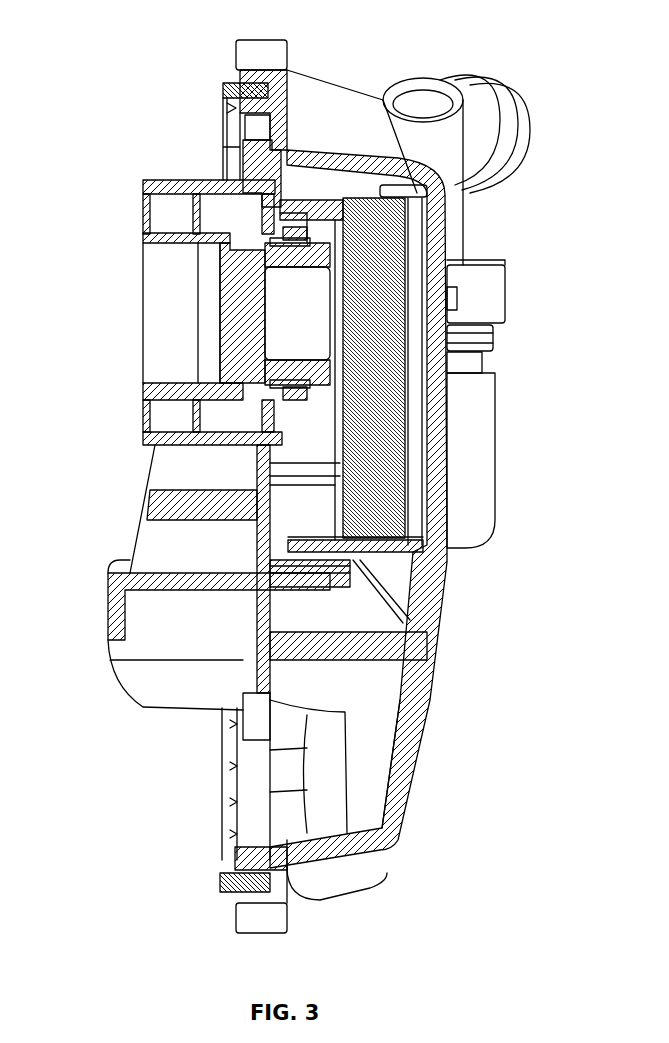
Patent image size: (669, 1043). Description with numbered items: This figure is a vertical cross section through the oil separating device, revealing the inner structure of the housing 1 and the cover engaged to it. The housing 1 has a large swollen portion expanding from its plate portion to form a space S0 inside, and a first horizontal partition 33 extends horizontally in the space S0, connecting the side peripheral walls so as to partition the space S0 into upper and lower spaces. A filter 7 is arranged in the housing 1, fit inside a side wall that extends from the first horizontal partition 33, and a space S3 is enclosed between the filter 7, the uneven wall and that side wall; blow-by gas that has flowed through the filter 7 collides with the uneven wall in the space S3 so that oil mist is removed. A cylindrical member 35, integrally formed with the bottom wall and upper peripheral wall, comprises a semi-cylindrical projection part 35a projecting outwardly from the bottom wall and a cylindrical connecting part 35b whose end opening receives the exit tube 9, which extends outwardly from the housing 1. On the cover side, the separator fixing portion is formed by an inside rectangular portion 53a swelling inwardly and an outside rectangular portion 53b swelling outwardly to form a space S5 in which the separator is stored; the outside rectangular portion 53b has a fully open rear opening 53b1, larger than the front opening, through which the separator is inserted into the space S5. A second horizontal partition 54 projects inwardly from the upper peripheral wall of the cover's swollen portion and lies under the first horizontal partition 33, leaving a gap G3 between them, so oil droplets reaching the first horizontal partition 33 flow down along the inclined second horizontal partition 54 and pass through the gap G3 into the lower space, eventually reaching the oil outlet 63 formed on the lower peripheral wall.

The housing 1 is at (425, 598).
The filter 7 is at (383, 458).
The exit tube 9 is at (497, 120).
The first horizontal partition 33 is at (407, 545).
The cylindrical member 35 is at (478, 360).
The semi-cylindrical projection part 35a is at (480, 438).
The cylindrical connecting part 35b is at (485, 333).
The inside rectangular portion 53a is at (275, 187).
The outside rectangular portion 53b is at (167, 178).
The rear opening 53b1 is at (153, 292).
The second horizontal partition 54 is at (427, 653).
The oil outlet 63 is at (173, 710).
The gap G3 is at (280, 560).
The space S0 is at (325, 490).
The space S3 is at (405, 237).
The space S5 is at (155, 350).